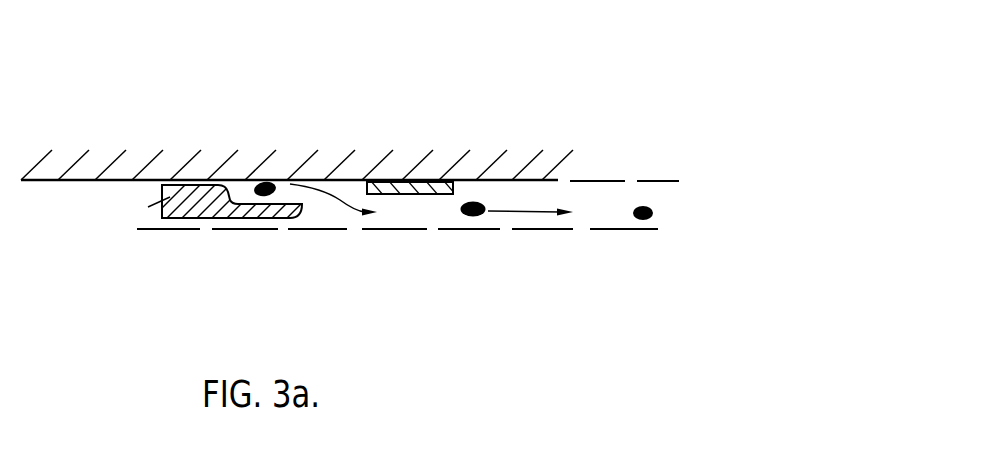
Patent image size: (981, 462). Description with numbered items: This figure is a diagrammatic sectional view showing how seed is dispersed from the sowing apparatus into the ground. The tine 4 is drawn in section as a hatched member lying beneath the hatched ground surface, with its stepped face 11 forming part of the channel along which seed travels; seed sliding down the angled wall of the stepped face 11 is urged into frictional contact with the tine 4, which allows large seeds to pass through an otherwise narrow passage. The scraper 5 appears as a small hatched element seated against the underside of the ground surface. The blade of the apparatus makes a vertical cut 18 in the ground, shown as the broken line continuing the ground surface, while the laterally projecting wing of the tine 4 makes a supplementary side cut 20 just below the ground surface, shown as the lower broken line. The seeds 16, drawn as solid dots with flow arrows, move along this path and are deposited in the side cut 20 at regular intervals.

The tine 4 is at (60, 177).
The scraper 5 is at (397, 189).
The stepped face 11 is at (237, 198).
The seeds 16 is at (263, 184).
The vertical cut 18 is at (600, 180).
The supplementary side cut 20 is at (527, 232).